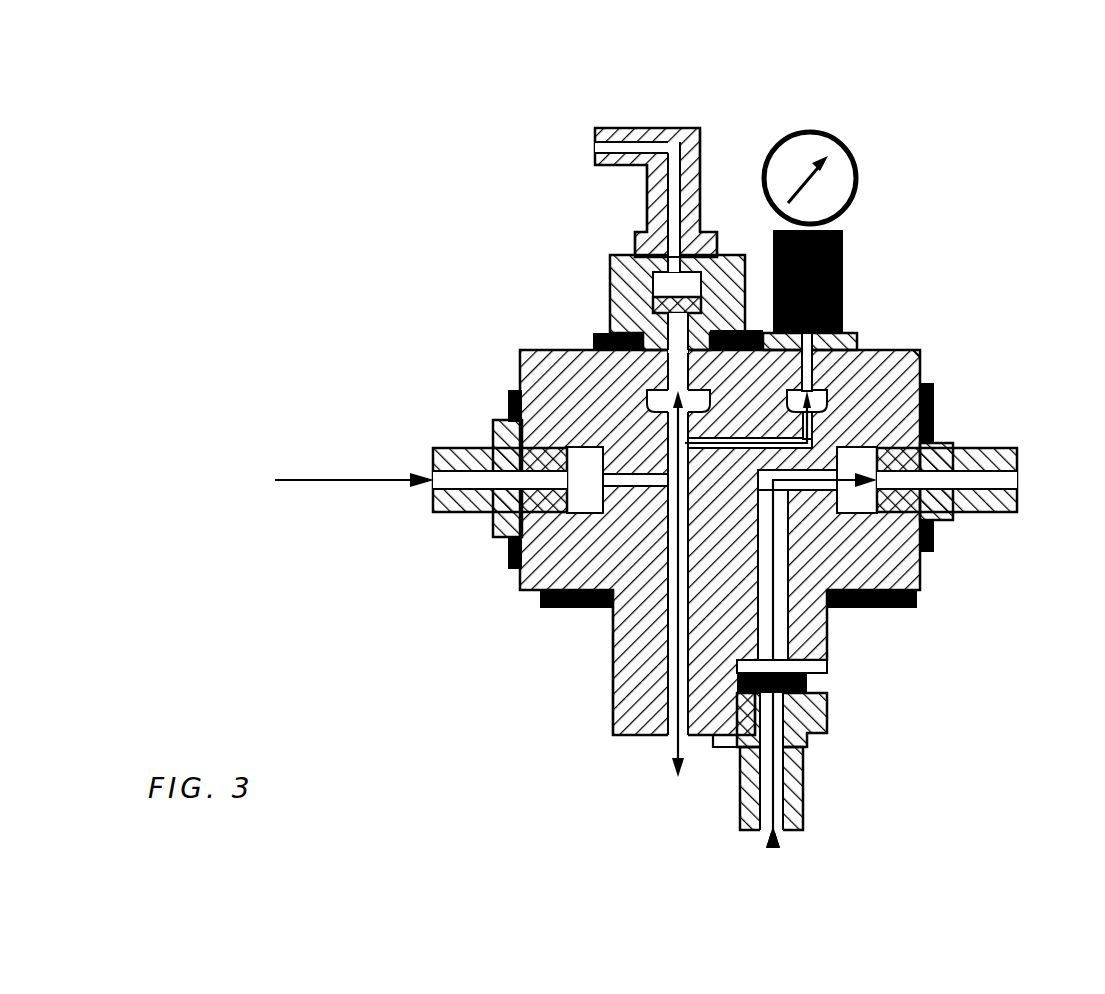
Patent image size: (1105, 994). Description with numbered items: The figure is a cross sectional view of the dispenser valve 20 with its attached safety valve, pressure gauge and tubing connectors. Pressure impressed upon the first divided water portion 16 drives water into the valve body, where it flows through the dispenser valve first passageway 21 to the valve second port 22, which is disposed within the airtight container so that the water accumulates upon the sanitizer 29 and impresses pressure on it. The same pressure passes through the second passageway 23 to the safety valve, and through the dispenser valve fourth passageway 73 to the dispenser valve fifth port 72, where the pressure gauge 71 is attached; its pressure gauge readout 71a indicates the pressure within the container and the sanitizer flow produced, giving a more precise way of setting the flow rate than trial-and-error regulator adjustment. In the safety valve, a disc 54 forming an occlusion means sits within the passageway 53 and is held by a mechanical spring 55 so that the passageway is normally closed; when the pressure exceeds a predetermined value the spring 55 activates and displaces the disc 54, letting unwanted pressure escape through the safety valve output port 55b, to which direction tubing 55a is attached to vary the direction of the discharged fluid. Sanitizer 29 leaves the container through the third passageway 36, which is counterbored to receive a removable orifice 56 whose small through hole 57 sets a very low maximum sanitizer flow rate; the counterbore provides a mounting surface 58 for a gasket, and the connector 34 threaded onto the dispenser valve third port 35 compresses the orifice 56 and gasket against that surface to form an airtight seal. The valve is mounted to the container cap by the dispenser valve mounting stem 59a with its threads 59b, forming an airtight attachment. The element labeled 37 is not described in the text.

The first divided water portion 16 is at (368, 470).
The dispenser valve 20 is at (888, 350).
The dispenser valve first passageway 21 is at (676, 562).
The valve second port 22 is at (665, 735).
The second passageway 23 is at (673, 427).
The sanitizer 29 is at (776, 847).
The connector 34 is at (803, 807).
The dispenser valve third port 35 is at (717, 740).
The third passageway 36 is at (787, 628).
The outlet fitting 37 is at (938, 423).
The passageway 53 is at (677, 283).
The disc 54 is at (612, 280).
The mechanical spring 55 is at (713, 233).
The direction tubing 55a is at (640, 128).
The safety valve output port 55b is at (705, 230).
The orifice 56 is at (815, 719).
The through hole 57 is at (815, 687).
The mounting surface 58 is at (805, 664).
The dispenser valve mounting stem 59a is at (613, 632).
The threads 59b is at (545, 605).
The pressure gauge 71 is at (858, 138).
The pressure gauge readout 71a is at (800, 185).
The dispenser valve fifth port 72 is at (852, 333).
The dispenser valve fourth passageway 73 is at (918, 360).